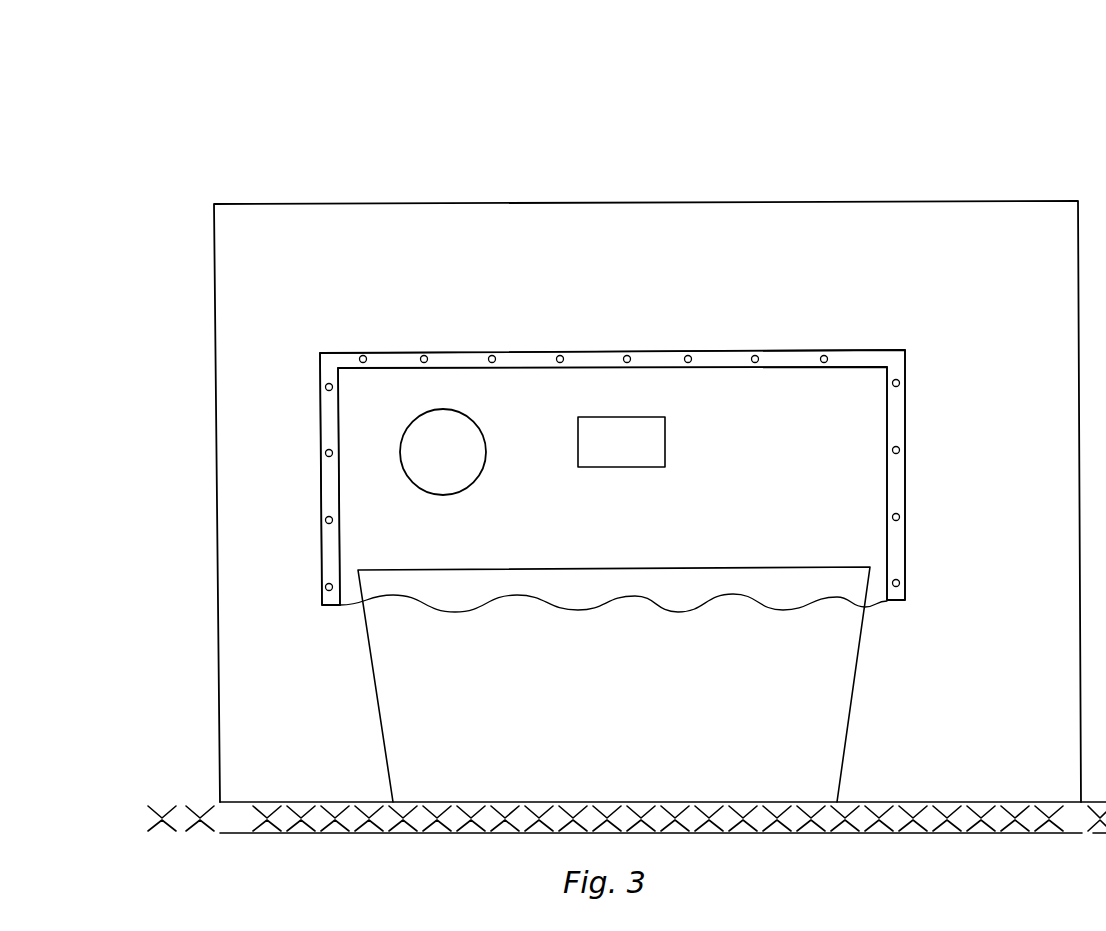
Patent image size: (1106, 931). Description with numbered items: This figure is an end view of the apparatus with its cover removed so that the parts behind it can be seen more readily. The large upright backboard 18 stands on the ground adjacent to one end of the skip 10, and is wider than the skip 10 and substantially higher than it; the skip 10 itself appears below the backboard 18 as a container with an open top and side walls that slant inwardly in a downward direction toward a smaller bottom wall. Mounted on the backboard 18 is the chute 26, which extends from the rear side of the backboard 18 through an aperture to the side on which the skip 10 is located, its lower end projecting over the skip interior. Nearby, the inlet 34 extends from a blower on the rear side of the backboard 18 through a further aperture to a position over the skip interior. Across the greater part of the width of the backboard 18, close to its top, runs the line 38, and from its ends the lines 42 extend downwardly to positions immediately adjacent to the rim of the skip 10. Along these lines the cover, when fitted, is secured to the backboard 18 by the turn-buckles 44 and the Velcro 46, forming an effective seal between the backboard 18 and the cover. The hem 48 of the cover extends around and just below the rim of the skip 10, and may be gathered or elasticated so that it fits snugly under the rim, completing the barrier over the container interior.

The skip 10 is at (835, 681).
The upright backboard 18 is at (423, 210).
The chute 26 is at (665, 447).
The inlet 34 is at (473, 478).
The line 38 is at (622, 438).
The lines 42 is at (328, 482).
The turn-buckles 44 is at (492, 358).
The Velcro 46 is at (790, 357).
The hem 48 is at (873, 607).